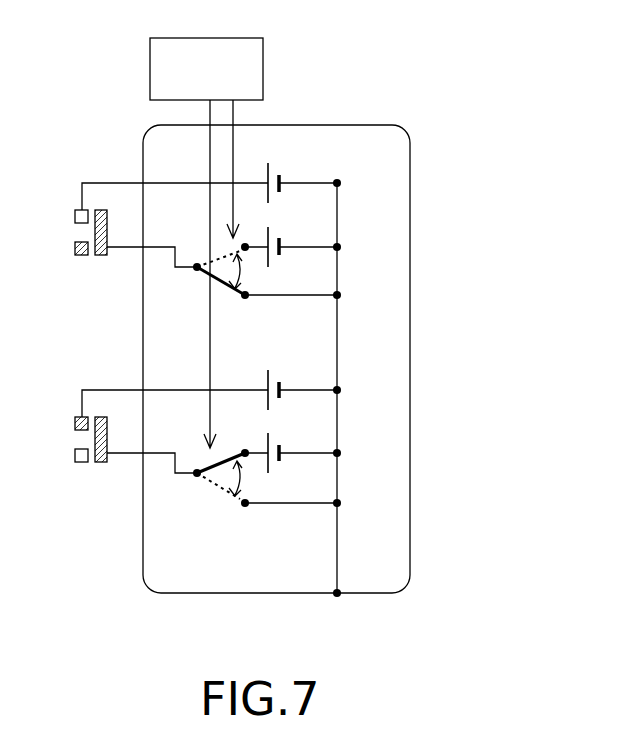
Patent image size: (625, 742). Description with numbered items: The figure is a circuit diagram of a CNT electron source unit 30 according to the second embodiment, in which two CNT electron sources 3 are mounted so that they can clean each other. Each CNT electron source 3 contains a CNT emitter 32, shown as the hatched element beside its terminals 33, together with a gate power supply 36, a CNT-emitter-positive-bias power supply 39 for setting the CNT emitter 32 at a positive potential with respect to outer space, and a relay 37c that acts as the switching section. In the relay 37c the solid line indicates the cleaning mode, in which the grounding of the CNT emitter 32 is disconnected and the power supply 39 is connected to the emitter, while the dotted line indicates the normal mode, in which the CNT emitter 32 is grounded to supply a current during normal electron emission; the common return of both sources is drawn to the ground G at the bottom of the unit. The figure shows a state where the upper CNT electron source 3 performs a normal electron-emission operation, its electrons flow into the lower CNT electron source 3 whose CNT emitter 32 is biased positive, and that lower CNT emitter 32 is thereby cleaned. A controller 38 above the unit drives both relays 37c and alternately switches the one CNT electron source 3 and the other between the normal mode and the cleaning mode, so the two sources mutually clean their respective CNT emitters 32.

The controller 38 is at (150, 63).
The CNT electron source unit 30 is at (342, 112).
The CNT electron source 3 is at (362, 366).
The gate power supply 36 is at (275, 163).
The CNT-emitter-positive-bias power supply 39 is at (275, 227).
The relay 37c is at (240, 298).
The terminal 33 is at (80, 259).
The CNT emitter 32 is at (101, 257).
The ground G is at (240, 594).